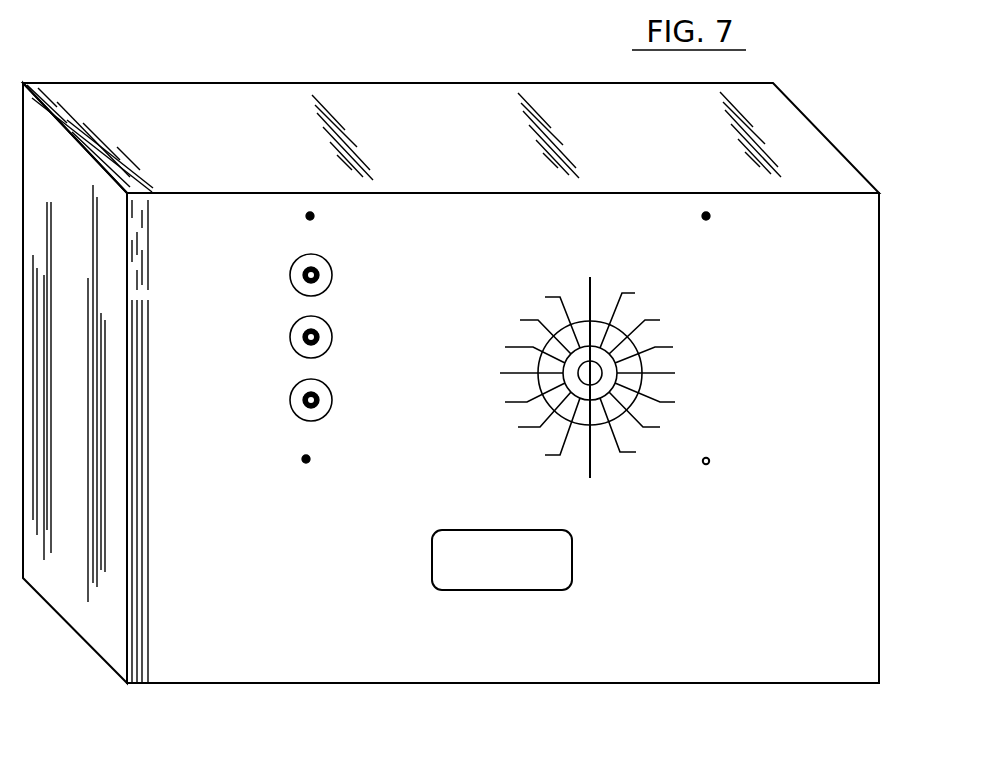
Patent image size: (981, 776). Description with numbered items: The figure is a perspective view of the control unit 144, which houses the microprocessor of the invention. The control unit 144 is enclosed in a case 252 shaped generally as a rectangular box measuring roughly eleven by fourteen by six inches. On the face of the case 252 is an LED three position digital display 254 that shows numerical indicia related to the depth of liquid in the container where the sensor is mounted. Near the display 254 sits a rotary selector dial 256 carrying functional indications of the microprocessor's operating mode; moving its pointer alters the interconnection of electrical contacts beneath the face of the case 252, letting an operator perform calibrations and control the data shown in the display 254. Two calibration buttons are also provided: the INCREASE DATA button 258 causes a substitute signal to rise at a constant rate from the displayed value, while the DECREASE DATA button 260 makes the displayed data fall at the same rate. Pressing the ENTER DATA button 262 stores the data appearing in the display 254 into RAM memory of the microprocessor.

The control unit 144 is at (781, 132).
The case 252 is at (836, 256).
The LED three position digital display 254 is at (492, 573).
The rotary selector dial 256 is at (590, 373).
The INCREASE DATA button 258 is at (317, 328).
The DECREASE DATA button 260 is at (302, 411).
The ENTER DATA button 262 is at (313, 267).